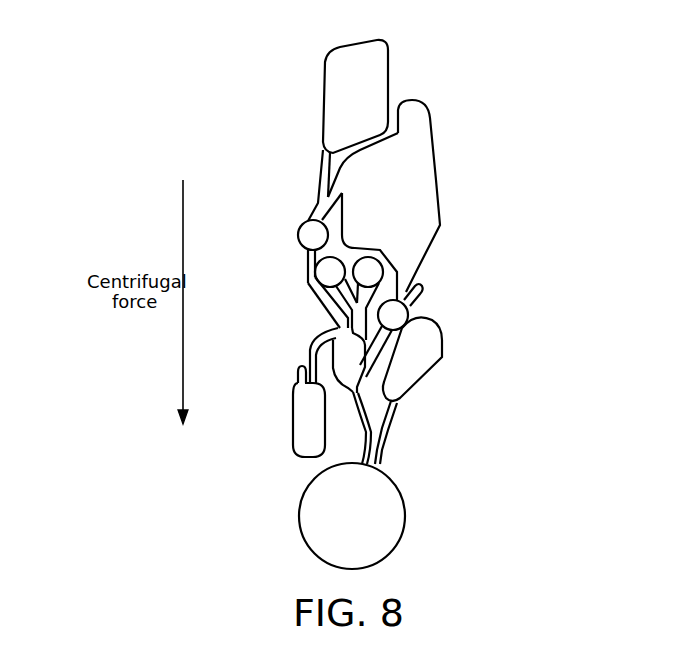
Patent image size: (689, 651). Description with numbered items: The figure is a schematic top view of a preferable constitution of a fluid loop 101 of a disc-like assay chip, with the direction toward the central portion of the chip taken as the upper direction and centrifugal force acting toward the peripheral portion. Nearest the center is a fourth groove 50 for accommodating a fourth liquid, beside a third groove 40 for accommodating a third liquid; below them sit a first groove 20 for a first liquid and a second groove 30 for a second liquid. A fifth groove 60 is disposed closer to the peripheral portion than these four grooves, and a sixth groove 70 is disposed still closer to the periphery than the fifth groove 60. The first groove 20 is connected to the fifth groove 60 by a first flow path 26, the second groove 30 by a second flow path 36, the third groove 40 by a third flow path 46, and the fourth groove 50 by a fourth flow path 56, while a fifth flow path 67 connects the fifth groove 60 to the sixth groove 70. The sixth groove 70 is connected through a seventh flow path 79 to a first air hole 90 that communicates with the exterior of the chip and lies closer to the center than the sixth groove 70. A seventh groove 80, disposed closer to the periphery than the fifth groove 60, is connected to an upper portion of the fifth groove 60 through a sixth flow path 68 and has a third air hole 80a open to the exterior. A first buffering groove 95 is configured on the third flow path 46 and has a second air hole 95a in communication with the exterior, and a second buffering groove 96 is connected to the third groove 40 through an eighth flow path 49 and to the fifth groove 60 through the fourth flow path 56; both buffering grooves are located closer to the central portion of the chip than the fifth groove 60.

The fluid loop 101 is at (474, 48).
The fourth groove 50 is at (330, 78).
The fourth flow path 56 is at (322, 180).
The eighth flow path 49 is at (327, 196).
The third groove 40 is at (428, 184).
The second buffering groove 96 is at (309, 230).
The second groove 30 is at (324, 271).
The first groove 20 is at (378, 273).
The second flow path 36 is at (333, 298).
The first flow path 26 is at (368, 310).
The first buffering groove 95 is at (398, 317).
The second air hole 95a is at (417, 292).
The third flow path 46 is at (405, 303).
The sixth flow path 68 is at (336, 333).
The fifth groove 60 is at (342, 349).
The third air hole 80a is at (298, 373).
The seventh groove 80 is at (300, 412).
The first air hole 90 is at (425, 378).
The fifth flow path 67 is at (364, 439).
The seventh flow path 79 is at (389, 431).
The sixth groove 70 is at (398, 507).